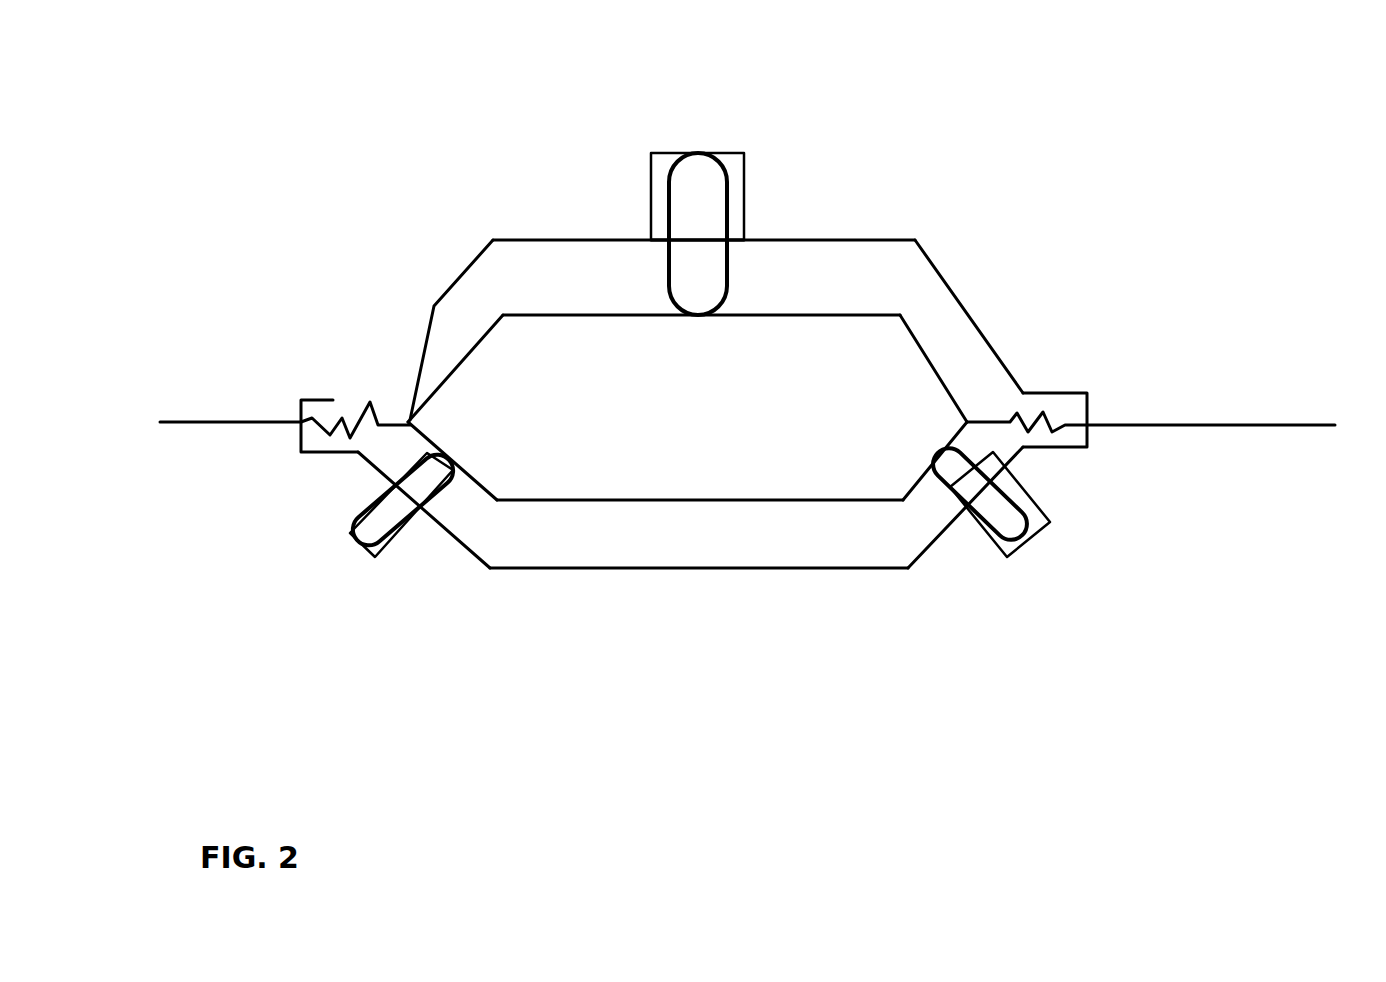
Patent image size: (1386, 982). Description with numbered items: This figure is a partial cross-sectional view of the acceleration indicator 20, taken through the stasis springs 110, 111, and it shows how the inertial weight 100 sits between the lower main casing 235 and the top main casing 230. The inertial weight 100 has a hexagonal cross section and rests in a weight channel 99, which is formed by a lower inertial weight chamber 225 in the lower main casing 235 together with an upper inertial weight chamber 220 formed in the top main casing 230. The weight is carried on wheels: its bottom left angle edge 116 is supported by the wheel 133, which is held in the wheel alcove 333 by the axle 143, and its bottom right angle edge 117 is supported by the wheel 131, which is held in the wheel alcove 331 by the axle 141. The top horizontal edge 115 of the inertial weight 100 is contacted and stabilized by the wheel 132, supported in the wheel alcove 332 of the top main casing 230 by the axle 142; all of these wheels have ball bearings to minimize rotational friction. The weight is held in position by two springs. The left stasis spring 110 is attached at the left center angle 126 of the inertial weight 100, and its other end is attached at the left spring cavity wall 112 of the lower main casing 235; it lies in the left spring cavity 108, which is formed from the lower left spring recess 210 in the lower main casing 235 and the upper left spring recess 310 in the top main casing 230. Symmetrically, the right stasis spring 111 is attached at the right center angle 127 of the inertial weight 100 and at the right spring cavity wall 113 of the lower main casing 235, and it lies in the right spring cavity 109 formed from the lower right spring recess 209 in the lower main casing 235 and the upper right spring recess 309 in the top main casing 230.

The acceleration indicator 20 is at (238, 788).
The inertial weight 100 is at (577, 377).
The top main casing 230 is at (585, 240).
The top horizontal edge 115 is at (567, 317).
The wheel 132 is at (692, 197).
The wheel alcove 332 is at (732, 168).
The left spring cavity wall 112 is at (298, 420).
The upper left spring recess 310 is at (316, 410).
The left spring cavity 108 is at (333, 410).
The left stasis spring 110 is at (345, 400).
The left center angle 126 is at (462, 262).
The axle 142 is at (730, 240).
The upper inertial weight chamber 220 is at (893, 285).
The right center angle 127 is at (967, 420).
The right spring cavity 109 is at (1037, 405).
The right stasis spring 111 is at (1073, 407).
The upper right spring recess 309 is at (1088, 396).
The right spring cavity wall 113 is at (1090, 422).
The wheel alcove 331 is at (1033, 530).
The wheel 131 is at (993, 512).
The lower right spring recess 209 is at (1062, 435).
The lower left spring recess 210 is at (308, 452).
The wheel 133 is at (397, 535).
The wheel alcove 333 is at (398, 553).
The axle 143 is at (440, 527).
The bottom left angle edge 116 is at (466, 485).
The weight channel 99 is at (683, 530).
The lower inertial weight chamber 225 is at (752, 530).
The lower main casing 235 is at (838, 570).
The bottom right angle edge 117 is at (922, 477).
The axle 141 is at (1007, 557).